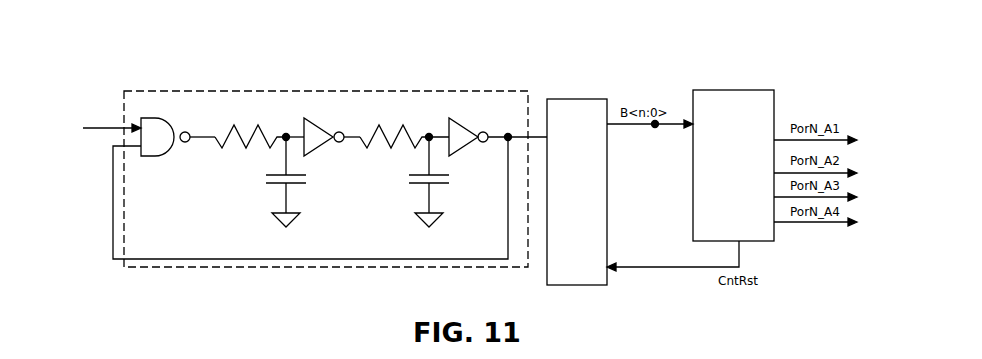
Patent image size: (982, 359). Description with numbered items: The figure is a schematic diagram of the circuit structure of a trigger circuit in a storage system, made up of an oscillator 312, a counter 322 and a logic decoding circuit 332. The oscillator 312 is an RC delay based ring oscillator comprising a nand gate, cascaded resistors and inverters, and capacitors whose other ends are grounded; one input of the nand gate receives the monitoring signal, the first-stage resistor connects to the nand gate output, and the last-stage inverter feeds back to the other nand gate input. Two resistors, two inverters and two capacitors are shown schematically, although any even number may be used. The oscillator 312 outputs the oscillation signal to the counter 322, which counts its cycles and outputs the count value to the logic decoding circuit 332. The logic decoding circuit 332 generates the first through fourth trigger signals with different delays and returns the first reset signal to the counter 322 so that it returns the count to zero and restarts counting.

The oscillator 312 is at (351, 91).
The counter 322 is at (607, 195).
The logic decoding circuit 332 is at (763, 90).